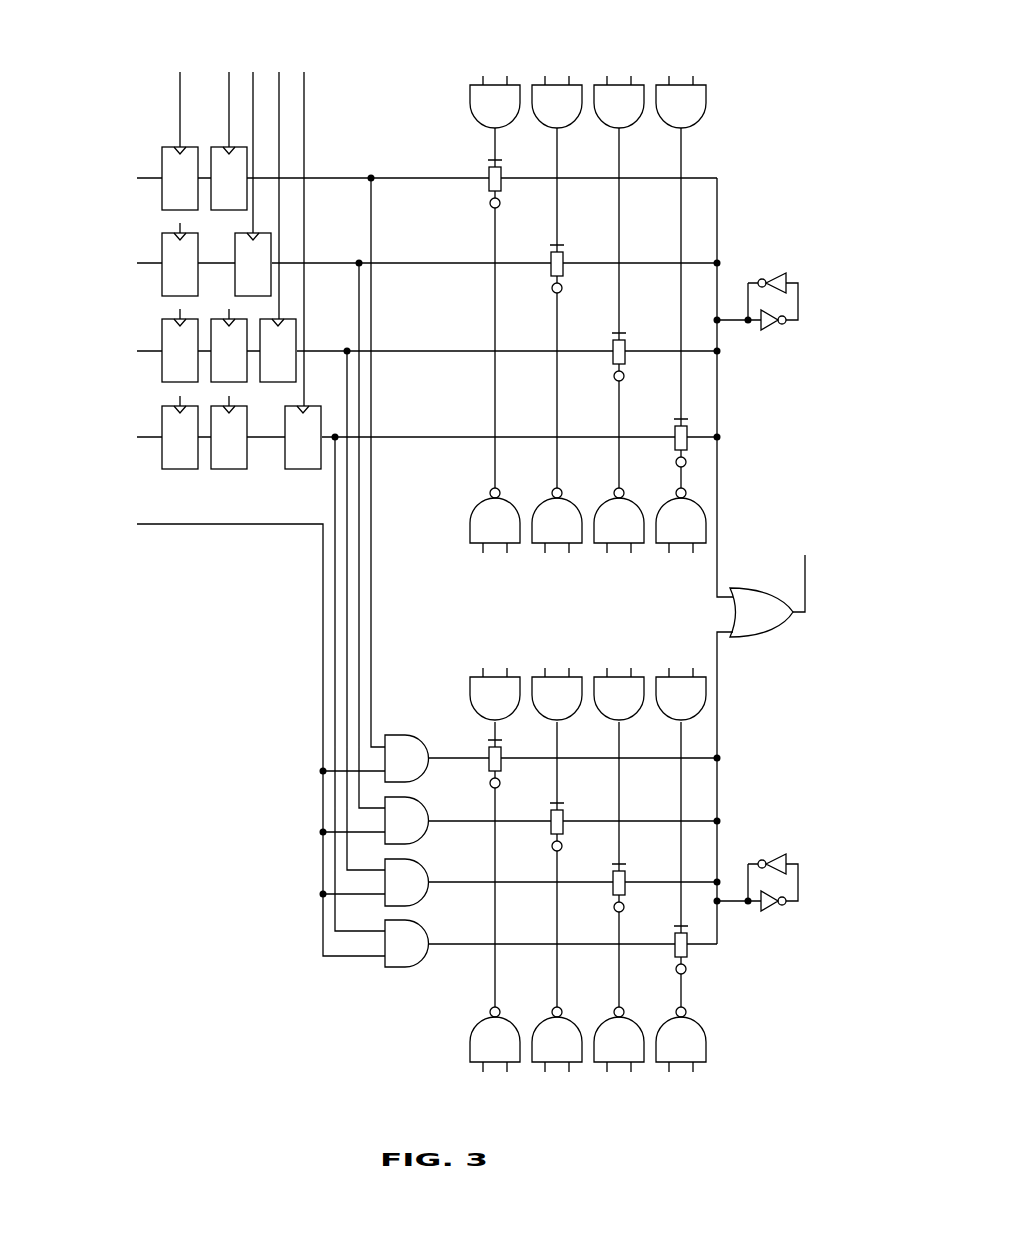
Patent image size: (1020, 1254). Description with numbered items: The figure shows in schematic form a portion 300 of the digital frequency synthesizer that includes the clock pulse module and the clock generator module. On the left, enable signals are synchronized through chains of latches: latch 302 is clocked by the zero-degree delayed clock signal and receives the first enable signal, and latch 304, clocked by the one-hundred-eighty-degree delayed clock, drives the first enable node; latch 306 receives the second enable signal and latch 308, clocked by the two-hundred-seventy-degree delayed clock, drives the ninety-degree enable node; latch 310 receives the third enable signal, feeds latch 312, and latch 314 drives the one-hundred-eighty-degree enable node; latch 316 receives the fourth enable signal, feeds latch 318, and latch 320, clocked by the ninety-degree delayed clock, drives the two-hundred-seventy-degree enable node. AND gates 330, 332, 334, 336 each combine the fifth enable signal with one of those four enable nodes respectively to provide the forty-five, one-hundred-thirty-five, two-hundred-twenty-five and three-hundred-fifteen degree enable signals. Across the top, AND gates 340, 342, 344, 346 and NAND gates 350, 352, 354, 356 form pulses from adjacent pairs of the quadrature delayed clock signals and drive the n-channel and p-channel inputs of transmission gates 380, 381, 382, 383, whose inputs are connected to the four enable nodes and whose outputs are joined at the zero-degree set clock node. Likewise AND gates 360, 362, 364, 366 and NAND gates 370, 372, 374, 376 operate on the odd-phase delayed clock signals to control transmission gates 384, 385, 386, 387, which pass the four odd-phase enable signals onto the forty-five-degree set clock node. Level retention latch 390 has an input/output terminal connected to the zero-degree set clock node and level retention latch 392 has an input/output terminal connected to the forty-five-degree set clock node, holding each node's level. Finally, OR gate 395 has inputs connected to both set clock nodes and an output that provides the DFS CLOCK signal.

The portion 300 is at (439, 559).
The latch 302 is at (166, 203).
The latch 304 is at (215, 203).
The latch 306 is at (166, 289).
The latch 308 is at (239, 289).
The latch 310 is at (166, 375).
The latch 312 is at (215, 375).
The latch 314 is at (264, 375).
The latch 316 is at (166, 462).
The latch 318 is at (215, 462).
The latch 320 is at (289, 462).
The AND gate 330 is at (390, 769).
The AND gate 332 is at (390, 831).
The AND gate 334 is at (390, 893).
The AND gate 336 is at (390, 954).
The AND gate 340 is at (481, 112).
The AND gate 342 is at (543, 112).
The AND gate 344 is at (605, 112).
The AND gate 346 is at (667, 112).
The NAND gate 350 is at (481, 532).
The NAND gate 352 is at (543, 532).
The NAND gate 354 is at (605, 532).
The NAND gate 356 is at (667, 532).
The AND gate 360 is at (481, 710).
The AND gate 362 is at (543, 710).
The AND gate 364 is at (605, 710).
The AND gate 366 is at (667, 710).
The NAND gate 370 is at (481, 1050).
The NAND gate 372 is at (543, 1050).
The NAND gate 374 is at (605, 1050).
The NAND gate 376 is at (667, 1050).
The transmission gate 380 is at (512, 197).
The transmission gate 381 is at (573, 285).
The transmission gate 382 is at (605, 372).
The transmission gate 383 is at (665, 417).
The transmission gate 384 is at (512, 775).
The transmission gate 385 is at (573, 835).
The transmission gate 386 is at (605, 897).
The transmission gate 387 is at (665, 927).
The level retention latch 390 is at (783, 343).
The level retention latch 392 is at (783, 927).
The OR gate 395 is at (744, 622).